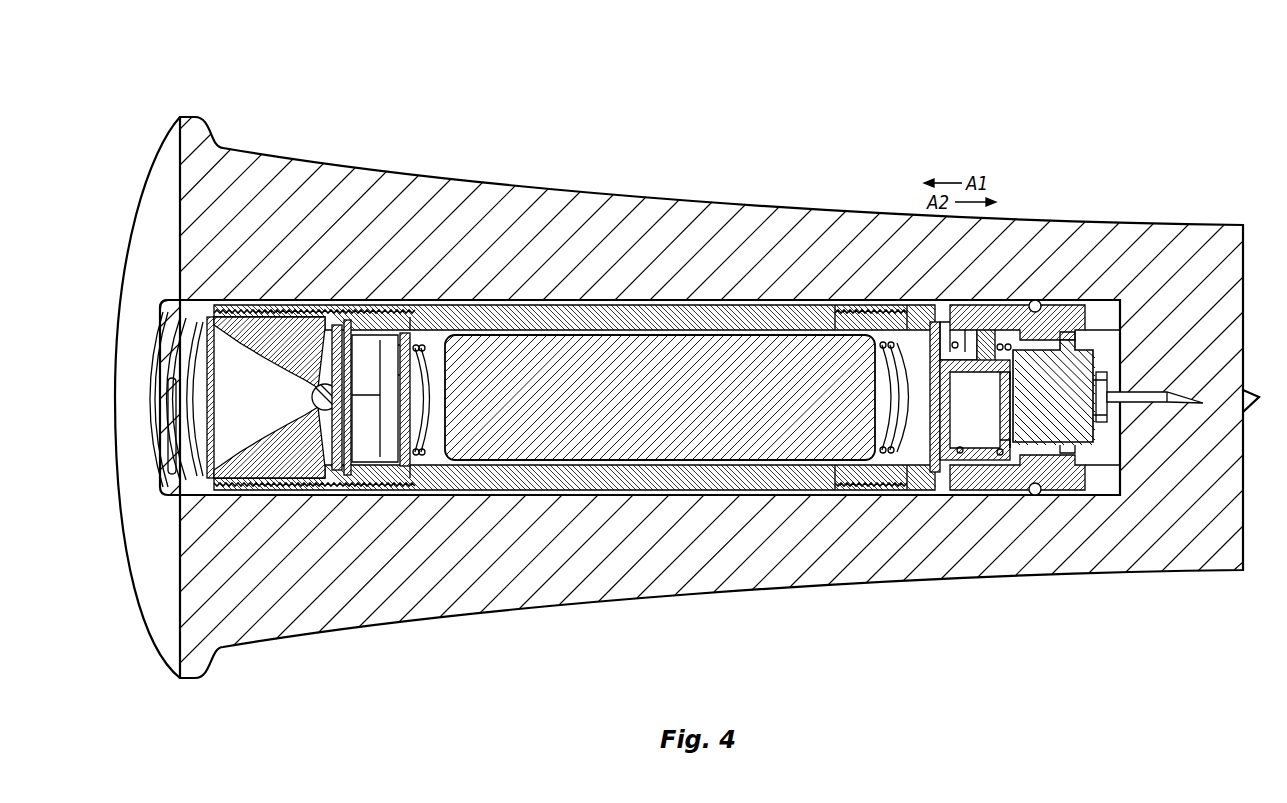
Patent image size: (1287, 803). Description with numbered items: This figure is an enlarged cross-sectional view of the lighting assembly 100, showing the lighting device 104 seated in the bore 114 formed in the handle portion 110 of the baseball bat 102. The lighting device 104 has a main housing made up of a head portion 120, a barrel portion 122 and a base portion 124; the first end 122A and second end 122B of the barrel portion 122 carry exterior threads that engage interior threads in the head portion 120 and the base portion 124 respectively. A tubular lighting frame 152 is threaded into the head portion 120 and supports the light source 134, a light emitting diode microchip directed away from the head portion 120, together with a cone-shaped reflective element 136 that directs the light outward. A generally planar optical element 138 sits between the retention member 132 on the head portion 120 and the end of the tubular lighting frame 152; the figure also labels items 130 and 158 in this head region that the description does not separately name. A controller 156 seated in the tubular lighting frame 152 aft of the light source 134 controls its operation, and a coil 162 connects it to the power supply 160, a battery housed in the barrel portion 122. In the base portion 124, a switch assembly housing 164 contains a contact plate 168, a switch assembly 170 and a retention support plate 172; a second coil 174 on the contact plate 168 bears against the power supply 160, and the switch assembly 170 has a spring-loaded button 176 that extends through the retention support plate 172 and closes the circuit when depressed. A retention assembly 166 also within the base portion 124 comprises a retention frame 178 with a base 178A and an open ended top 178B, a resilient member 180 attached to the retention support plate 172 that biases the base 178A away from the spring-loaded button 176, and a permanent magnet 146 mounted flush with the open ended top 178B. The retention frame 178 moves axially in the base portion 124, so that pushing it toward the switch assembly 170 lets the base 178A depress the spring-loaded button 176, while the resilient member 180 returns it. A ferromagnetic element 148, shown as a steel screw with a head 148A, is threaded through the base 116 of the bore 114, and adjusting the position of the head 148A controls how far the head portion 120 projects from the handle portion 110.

The flashlight 100 is at (1121, 70).
The baseball bat 102 is at (570, 182).
The lighting device 104 is at (585, 233).
The handle portion 110 is at (602, 290).
The bore 114 is at (1086, 470).
The base 116 is at (1107, 412).
The head portion 120 is at (342, 484).
The barrel portion 122 is at (707, 480).
The first end 122A is at (368, 486).
The second end 122B is at (897, 478).
The base portion 124 is at (1020, 460).
The lens 130 is at (178, 457).
The retention member 132 is at (173, 317).
The light source 134 is at (222, 480).
The reflective element 136 is at (250, 420).
The optical element 138 is at (208, 358).
The permanent magnet 146 is at (1082, 428).
The ferromagnetic element 148 is at (1120, 382).
The head 148A is at (1125, 382).
The tubular lighting frame 152 is at (343, 322).
The controller 156 is at (433, 333).
The bulb 158 is at (318, 403).
The power supply 160 is at (647, 428).
The coil 162 is at (412, 347).
The switch assembly housing 164 is at (953, 326).
The retention assembly 166 is at (1000, 462).
The contact plate 168 is at (915, 322).
The switch assembly 170 is at (982, 320).
The retention support plate 172 is at (995, 318).
The second coil 174 is at (872, 478).
The spring-loaded button 176 is at (1036, 340).
The retention frame 178 is at (1103, 480).
The base 178A is at (1018, 480).
The open ended top 178B is at (1108, 370).
The resilient member 180 is at (1012, 338).